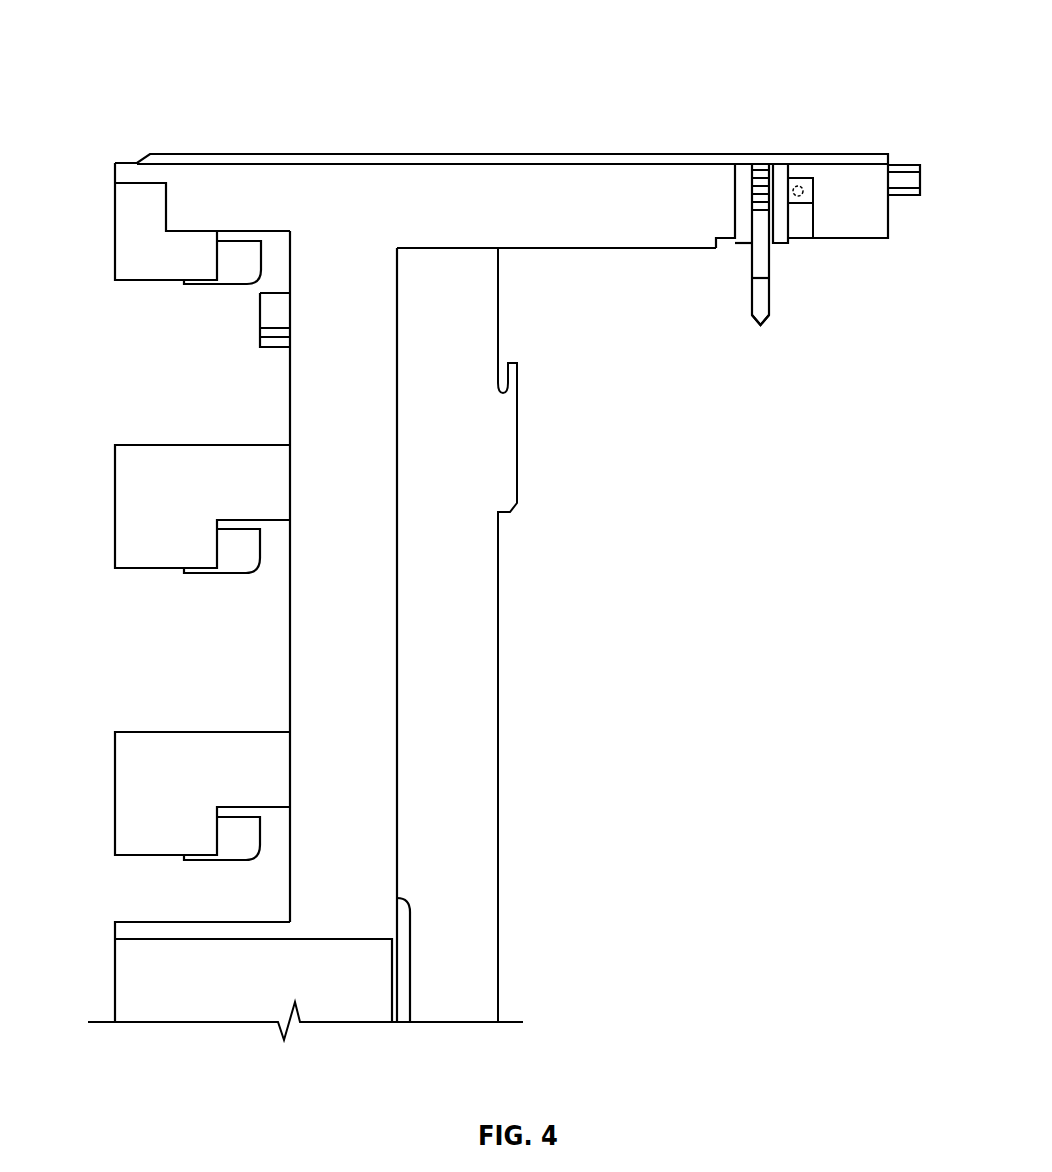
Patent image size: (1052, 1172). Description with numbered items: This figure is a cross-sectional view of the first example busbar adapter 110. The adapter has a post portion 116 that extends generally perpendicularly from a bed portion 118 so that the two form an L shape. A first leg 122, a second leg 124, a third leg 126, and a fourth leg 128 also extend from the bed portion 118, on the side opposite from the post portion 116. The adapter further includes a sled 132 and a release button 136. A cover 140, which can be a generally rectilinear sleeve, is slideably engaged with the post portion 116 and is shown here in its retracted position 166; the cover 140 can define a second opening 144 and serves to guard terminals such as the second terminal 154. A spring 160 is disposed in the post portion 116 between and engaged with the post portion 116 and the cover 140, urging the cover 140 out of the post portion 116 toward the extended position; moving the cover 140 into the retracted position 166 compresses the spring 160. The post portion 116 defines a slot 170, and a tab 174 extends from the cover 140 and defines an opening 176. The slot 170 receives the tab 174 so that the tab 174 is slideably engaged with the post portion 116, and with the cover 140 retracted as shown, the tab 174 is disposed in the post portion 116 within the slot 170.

The first example busbar adapter 110 is at (170, 47).
The post portion 116 is at (610, 195).
The bed portion 118 is at (336, 258).
The first leg 122 is at (122, 226).
The second leg 124 is at (130, 511).
The third leg 126 is at (123, 781).
The fourth leg 128 is at (120, 960).
The sled 132 is at (455, 898).
The release button 136 is at (900, 166).
The cover 140 is at (792, 241).
The second opening 144 is at (742, 180).
The second terminal 154 is at (779, 351).
The spring 160 is at (758, 174).
The retracted position 166 is at (740, 257).
The slot 170 is at (845, 214).
The tab 174 is at (803, 187).
The opening 176 is at (803, 198).